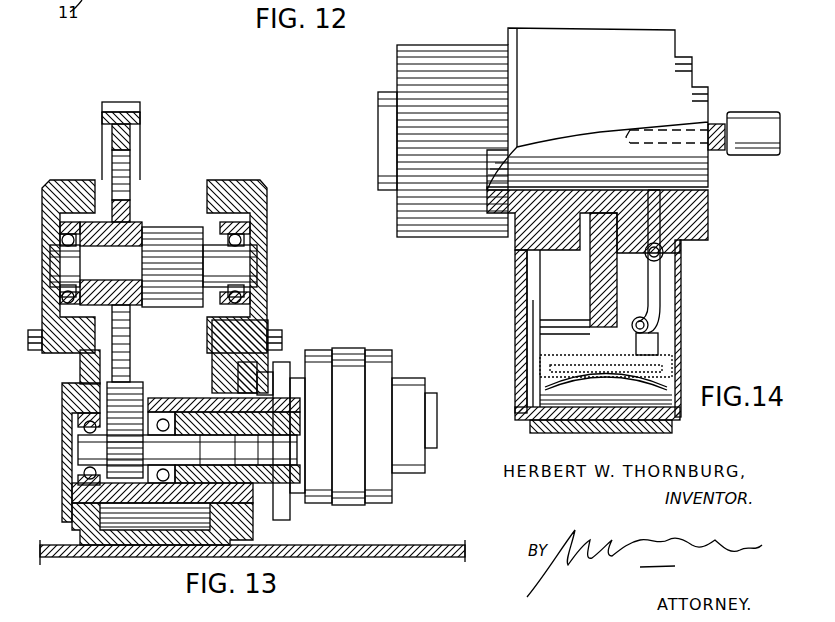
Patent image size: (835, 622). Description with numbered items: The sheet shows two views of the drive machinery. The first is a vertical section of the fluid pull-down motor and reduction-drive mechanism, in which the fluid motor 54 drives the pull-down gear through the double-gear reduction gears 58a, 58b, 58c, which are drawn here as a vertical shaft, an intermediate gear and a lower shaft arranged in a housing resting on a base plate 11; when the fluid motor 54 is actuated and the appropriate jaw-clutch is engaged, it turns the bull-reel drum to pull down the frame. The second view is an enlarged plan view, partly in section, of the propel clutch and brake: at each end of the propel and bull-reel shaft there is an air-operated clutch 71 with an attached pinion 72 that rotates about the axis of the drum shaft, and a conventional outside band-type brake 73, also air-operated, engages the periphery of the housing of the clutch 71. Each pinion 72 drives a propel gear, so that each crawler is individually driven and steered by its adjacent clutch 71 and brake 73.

In FIG. 13, the base plate 11 is at (385, 545).
In FIG. 13, the fluid motor 54 is at (347, 367).
In FIG. 13, the double-gear reduction gear 58a is at (110, 449).
In FIG. 13, the double-gear reduction gear 58b is at (117, 102).
In FIG. 13, the double-gear reduction gear 58c is at (171, 227).
In FIG. 14, the air-operated clutch 71 is at (682, 268).
In FIG. 14, the pinion 72 is at (413, 237).
In FIG. 14, the outside band-type brake 73 is at (530, 429).